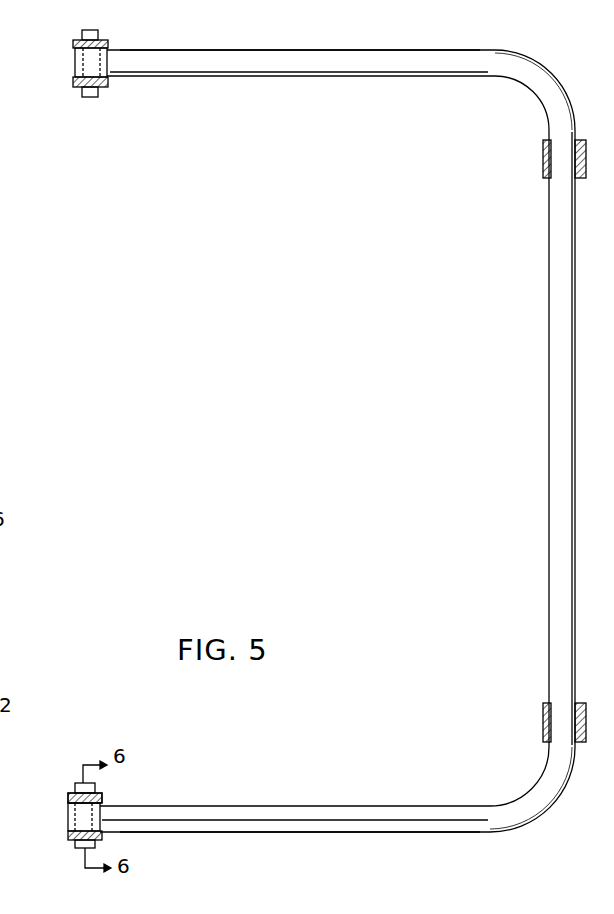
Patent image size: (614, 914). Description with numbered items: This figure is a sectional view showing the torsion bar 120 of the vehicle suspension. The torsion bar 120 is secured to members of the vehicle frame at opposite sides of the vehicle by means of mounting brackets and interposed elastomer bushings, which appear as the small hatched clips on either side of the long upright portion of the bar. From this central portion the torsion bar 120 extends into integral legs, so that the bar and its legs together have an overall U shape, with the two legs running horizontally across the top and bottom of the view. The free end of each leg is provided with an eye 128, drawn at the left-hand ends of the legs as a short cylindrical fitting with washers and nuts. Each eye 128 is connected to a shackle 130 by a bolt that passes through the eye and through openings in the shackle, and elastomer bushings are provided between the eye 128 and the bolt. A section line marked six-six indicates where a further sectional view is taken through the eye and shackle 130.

The torsion bar 120 is at (553, 405).
The eye 128 is at (68, 818).
The shackle 130 is at (100, 795).